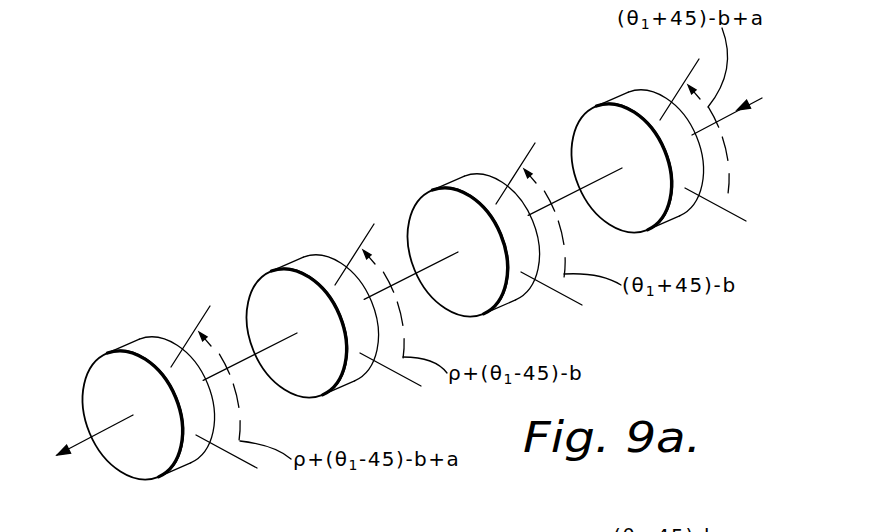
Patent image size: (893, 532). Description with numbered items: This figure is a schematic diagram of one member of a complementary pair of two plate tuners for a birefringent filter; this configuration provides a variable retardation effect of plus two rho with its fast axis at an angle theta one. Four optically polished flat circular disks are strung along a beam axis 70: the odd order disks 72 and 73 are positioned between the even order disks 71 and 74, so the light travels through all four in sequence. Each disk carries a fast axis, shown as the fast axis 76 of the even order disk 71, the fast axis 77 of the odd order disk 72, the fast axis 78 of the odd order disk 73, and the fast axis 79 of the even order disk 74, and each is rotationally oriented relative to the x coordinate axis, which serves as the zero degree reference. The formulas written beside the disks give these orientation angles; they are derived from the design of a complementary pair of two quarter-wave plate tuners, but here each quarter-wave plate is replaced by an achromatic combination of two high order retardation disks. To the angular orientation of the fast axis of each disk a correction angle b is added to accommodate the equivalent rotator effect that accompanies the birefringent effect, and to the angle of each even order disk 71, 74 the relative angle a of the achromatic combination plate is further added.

The beam axis 70 is at (83, 442).
The even order disk 71 is at (637, 170).
The odd order disk 72 is at (473, 255).
The odd order disk 73 is at (312, 337).
The even order disk 74 is at (160, 420).
The fast axis 76 is at (673, 82).
The fast axis 77 is at (511, 164).
The fast axis 78 is at (340, 243).
The fast axis 79 is at (180, 326).